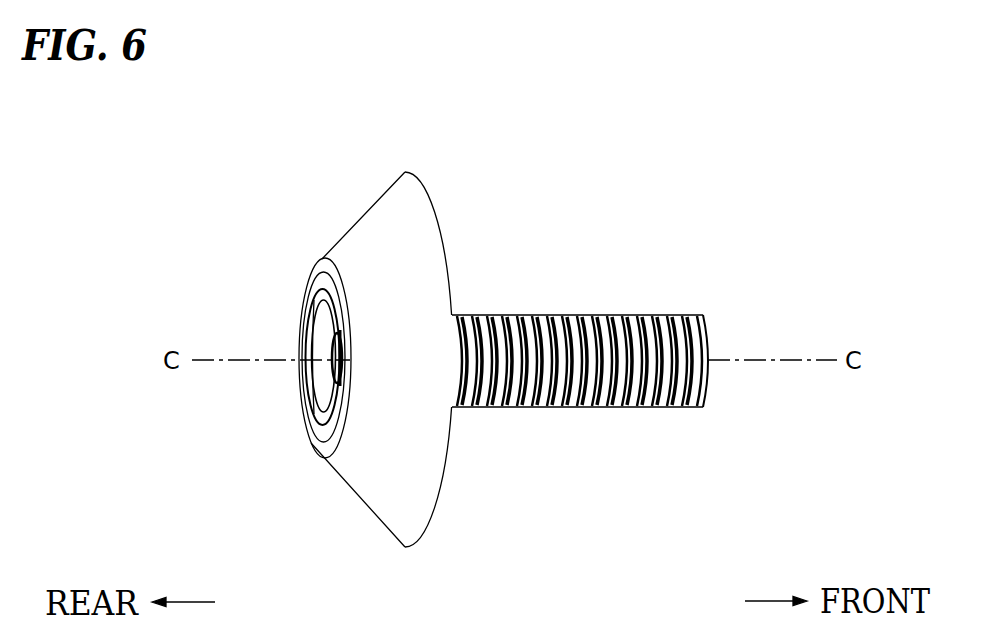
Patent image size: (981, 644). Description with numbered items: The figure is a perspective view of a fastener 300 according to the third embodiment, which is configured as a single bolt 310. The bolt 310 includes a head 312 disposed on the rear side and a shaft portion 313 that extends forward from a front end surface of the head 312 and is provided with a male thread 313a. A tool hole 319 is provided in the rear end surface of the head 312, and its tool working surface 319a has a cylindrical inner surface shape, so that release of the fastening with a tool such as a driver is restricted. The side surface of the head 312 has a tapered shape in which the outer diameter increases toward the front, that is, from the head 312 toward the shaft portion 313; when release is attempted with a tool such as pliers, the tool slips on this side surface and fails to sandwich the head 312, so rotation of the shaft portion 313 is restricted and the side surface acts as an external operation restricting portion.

The fastener 300 is at (210, 146).
The bolt 310 is at (499, 172).
The head 312 is at (372, 477).
The shaft portion 313 is at (712, 370).
The male thread 313a is at (580, 310).
The tool hole 319 is at (303, 391).
The tool working surface 319a is at (305, 320).